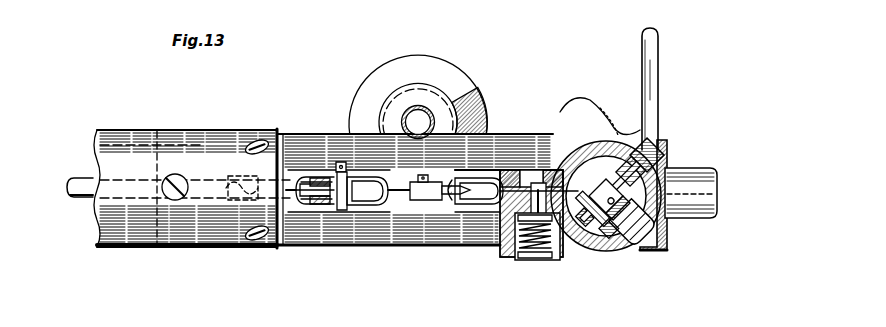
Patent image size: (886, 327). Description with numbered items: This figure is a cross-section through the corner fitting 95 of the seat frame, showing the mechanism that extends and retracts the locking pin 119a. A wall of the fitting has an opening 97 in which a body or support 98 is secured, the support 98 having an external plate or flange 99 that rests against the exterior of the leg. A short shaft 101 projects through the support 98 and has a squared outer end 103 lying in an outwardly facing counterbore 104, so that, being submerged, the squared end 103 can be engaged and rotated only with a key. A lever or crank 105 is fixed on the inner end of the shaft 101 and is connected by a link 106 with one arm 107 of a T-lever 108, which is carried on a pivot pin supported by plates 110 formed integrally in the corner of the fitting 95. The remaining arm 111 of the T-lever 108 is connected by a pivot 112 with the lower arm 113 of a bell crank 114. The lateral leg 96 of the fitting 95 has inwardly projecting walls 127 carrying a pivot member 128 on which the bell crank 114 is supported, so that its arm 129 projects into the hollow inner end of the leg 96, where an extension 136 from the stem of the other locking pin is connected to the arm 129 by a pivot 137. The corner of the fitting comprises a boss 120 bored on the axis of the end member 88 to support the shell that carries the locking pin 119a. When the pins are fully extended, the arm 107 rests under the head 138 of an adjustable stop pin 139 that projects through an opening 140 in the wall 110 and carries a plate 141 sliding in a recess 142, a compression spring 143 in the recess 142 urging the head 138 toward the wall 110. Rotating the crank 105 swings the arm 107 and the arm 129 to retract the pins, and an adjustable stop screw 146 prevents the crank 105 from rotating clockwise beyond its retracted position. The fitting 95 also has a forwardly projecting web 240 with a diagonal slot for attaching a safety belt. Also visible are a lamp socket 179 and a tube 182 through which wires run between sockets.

The end member 88 is at (132, 147).
The extension 136 is at (77, 202).
The lateral leg 96 is at (293, 137).
The corner fitting 95 is at (379, 257).
The arm of the bell crank 129 is at (303, 202).
The bell crank 114 is at (333, 194).
The pivot 137 is at (316, 181).
The pivot member 128 is at (343, 166).
The inwardly projecting walls 127 is at (322, 176).
The lower arm of the bell crank 113 is at (400, 193).
The pivot 112 is at (423, 203).
The remaining arm of the T-lever 111 is at (432, 200).
The plates 110 is at (458, 80).
The socket 179 is at (430, 100).
The tube 182 is at (417, 110).
The T-lever 108 is at (477, 172).
The opening 140 is at (500, 228).
The recess 142 is at (503, 243).
The head of the stop pin 138 is at (528, 182).
The adjustable stop pin 139 is at (540, 187).
The plate 141 is at (548, 259).
The compression spring 143 is at (518, 260).
The arm of the T-lever 107 is at (573, 140).
The link 106 is at (610, 190).
The adjustable stop screw 146 is at (656, 138).
The forwardly projecting web 240 is at (660, 54).
The boss 120 is at (667, 152).
The locking pin 119a is at (717, 194).
The lever or crank 105 is at (588, 254).
The body or support 98 is at (597, 248).
The opening 97 is at (603, 243).
The short shaft 101 is at (652, 195).
The external plate or flange 99 is at (663, 228).
The counterbore 104 is at (637, 250).
The squared outer end 103 is at (670, 247).